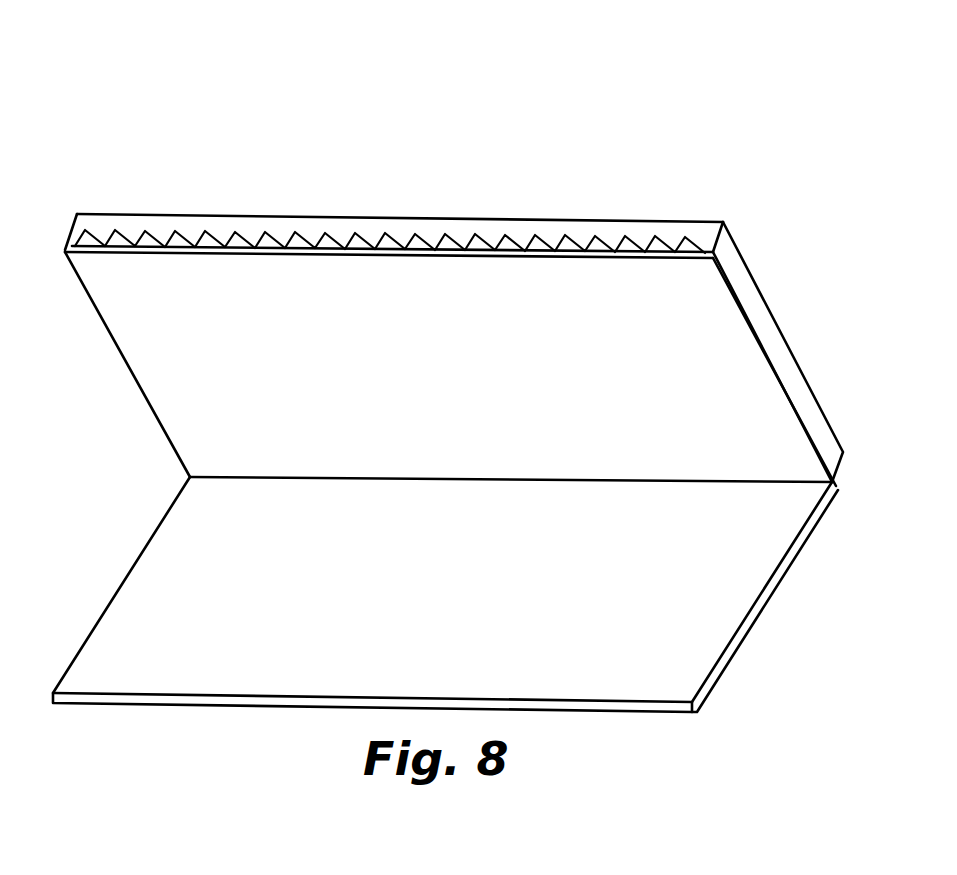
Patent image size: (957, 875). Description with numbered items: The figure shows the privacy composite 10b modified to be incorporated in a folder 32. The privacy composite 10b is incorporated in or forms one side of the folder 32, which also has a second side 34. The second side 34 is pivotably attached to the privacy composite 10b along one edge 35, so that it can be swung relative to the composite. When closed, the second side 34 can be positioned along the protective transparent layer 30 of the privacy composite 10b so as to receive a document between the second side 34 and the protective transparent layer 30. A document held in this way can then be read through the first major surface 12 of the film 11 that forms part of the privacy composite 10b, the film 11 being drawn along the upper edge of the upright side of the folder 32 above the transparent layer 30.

The folder 32 is at (517, 112).
The protective transparent layer 30 is at (158, 352).
The edge 35 is at (263, 480).
The second side 34 is at (723, 615).
The privacy composite 10b is at (565, 217).
The first major surface 12 is at (338, 218).
The film 11 is at (143, 215).